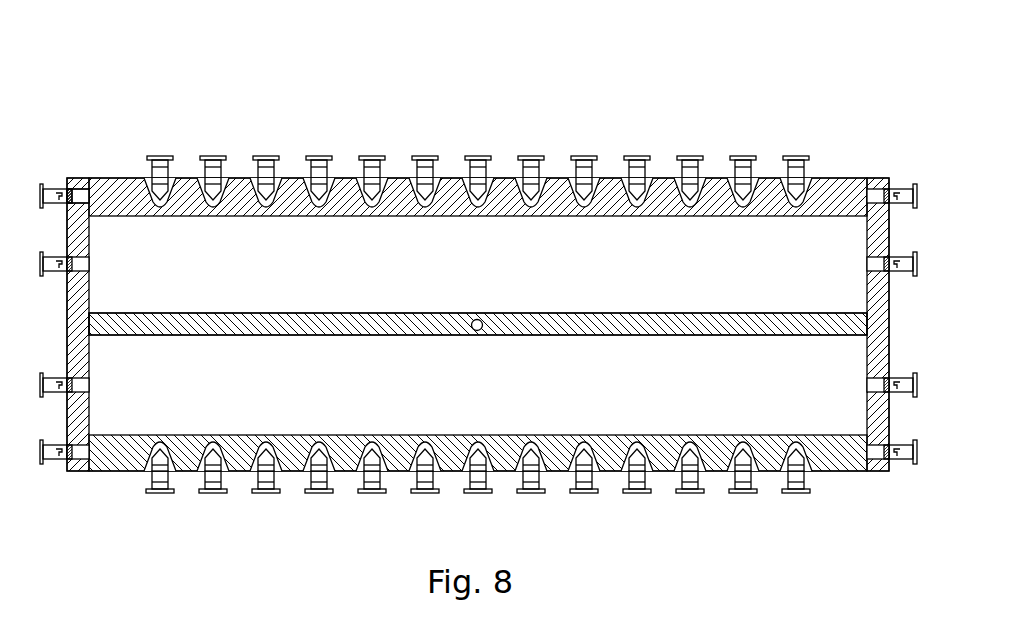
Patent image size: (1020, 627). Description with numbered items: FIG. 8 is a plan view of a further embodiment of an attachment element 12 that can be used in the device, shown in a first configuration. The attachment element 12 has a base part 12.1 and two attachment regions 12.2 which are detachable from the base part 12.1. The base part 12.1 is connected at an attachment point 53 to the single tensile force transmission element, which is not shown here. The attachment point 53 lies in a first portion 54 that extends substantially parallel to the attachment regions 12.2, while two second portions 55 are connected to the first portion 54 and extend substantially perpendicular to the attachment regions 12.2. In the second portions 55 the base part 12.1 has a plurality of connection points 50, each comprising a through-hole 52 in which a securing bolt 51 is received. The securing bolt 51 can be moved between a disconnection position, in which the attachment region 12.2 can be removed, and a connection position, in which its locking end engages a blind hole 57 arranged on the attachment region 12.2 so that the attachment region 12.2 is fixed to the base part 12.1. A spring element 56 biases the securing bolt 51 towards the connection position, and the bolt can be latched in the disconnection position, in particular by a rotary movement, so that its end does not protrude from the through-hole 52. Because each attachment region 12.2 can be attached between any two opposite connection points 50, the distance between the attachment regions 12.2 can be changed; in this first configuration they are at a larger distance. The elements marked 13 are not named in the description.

The attachment element 12 is at (103, 62).
The base part 12.1 is at (353, 327).
The attachment regions 12.2 is at (833, 192).
The nozzles 13 is at (580, 147).
The connection points 50 is at (92, 210).
The securing bolt 51 is at (53, 190).
The through-hole 52 is at (87, 191).
The attachment point 53 is at (481, 321).
The first portion 54 is at (180, 328).
The second portions 55 is at (80, 302).
The spring element 56 is at (72, 191).
The blind hole 57 is at (90, 456).